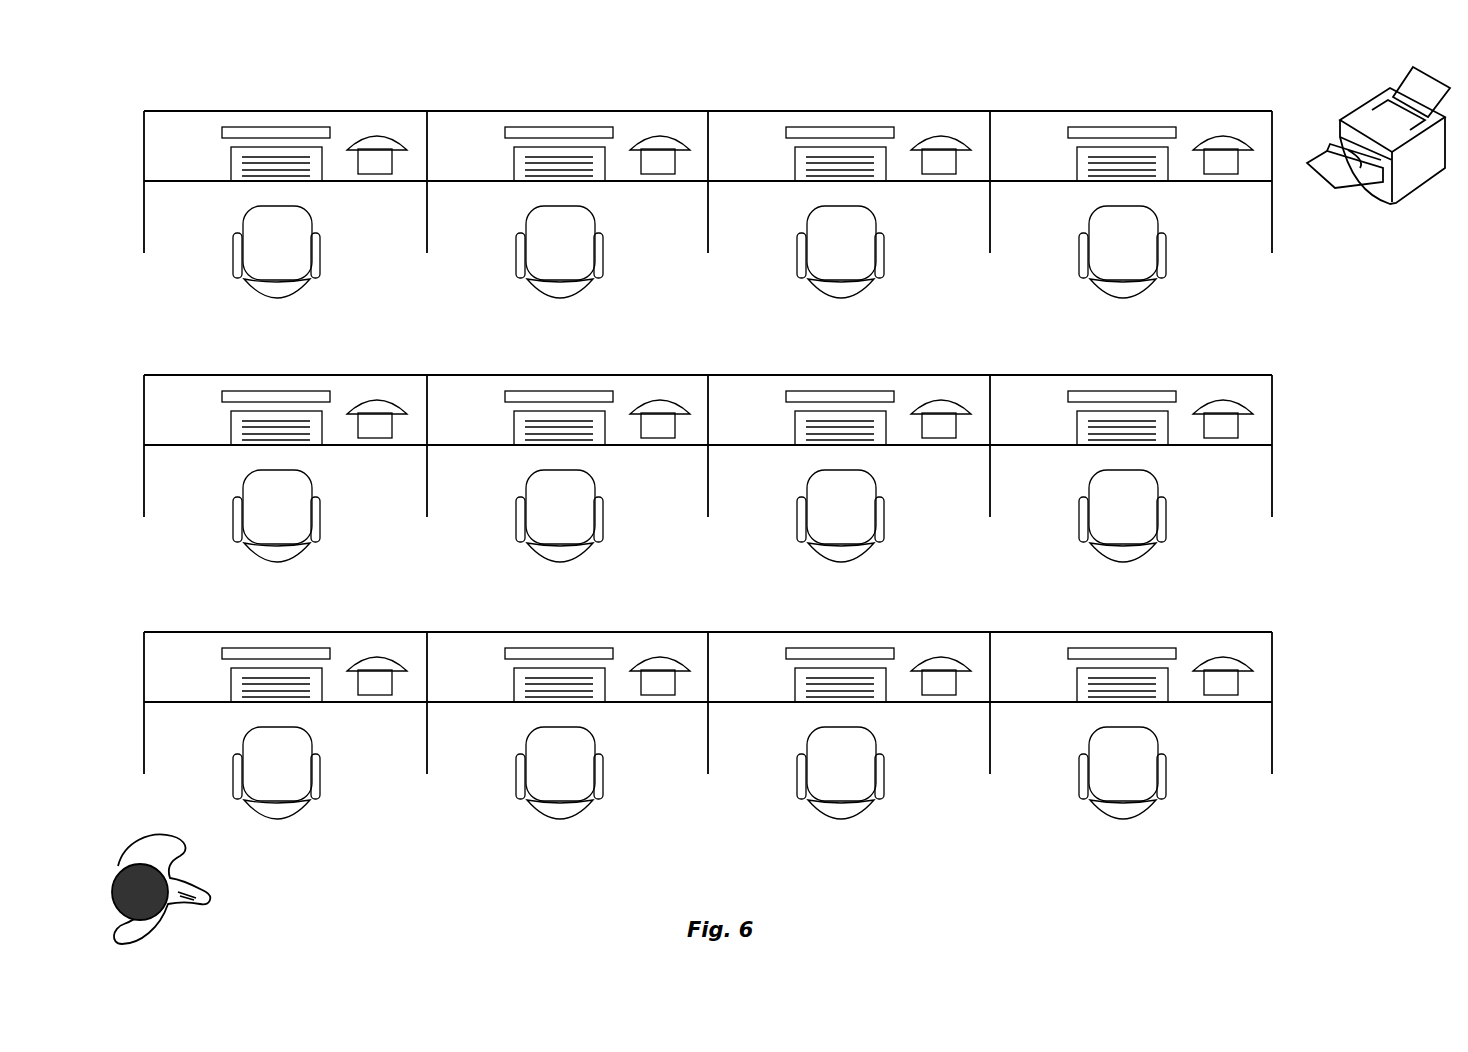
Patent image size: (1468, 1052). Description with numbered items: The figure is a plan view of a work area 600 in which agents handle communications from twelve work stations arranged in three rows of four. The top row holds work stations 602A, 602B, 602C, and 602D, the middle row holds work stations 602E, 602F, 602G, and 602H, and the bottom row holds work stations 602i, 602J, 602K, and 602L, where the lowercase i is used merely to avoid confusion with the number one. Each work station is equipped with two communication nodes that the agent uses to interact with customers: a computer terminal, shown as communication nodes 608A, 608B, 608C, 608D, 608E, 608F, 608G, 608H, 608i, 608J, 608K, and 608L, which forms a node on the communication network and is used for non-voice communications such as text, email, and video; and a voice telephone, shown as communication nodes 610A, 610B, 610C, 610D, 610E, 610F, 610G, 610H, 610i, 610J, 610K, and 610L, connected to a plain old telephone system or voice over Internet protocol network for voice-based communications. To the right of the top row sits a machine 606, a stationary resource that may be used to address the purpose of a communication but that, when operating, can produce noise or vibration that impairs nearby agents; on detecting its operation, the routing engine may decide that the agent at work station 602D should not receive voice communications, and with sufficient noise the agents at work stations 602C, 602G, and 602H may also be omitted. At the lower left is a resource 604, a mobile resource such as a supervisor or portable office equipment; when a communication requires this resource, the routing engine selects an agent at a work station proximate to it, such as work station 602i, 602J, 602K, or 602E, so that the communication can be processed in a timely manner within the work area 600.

The work area 600 is at (160, 81).
The work station 602A is at (390, 251).
The work station 602B is at (683, 251).
The work station 602C is at (966, 251).
The work station 602D is at (1248, 251).
The work station 602E is at (398, 515).
The work station 602F is at (683, 515).
The work station 602G is at (961, 515).
The work station 602H is at (1245, 515).
The work station 602i is at (390, 772).
The work station 602J is at (678, 772).
The work station 602K is at (966, 772).
The work station 602L is at (1255, 772).
The resource 604 is at (257, 876).
The machine 606 is at (1397, 193).
The communication node 608A is at (265, 127).
The communication node 608B is at (548, 127).
The communication node 608C is at (829, 127).
The communication node 608D is at (1111, 127).
The communication node 608E is at (265, 391).
The communication node 608F is at (548, 391).
The communication node 608G is at (829, 391).
The communication node 608H is at (1111, 391).
The communication node 608i is at (265, 648).
The communication node 608J is at (548, 648).
The communication node 608K is at (829, 648).
The communication node 608L is at (1111, 648).
The communication node 610A is at (387, 140).
The communication node 610B is at (670, 140).
The communication node 610C is at (951, 140).
The communication node 610D is at (1233, 140).
The communication node 610E is at (387, 404).
The communication node 610F is at (670, 404).
The communication node 610G is at (951, 404).
The communication node 610H is at (1233, 404).
The communication node 610i is at (387, 661).
The communication node 610J is at (670, 661).
The communication node 610K is at (951, 661).
The communication node 610L is at (1233, 661).